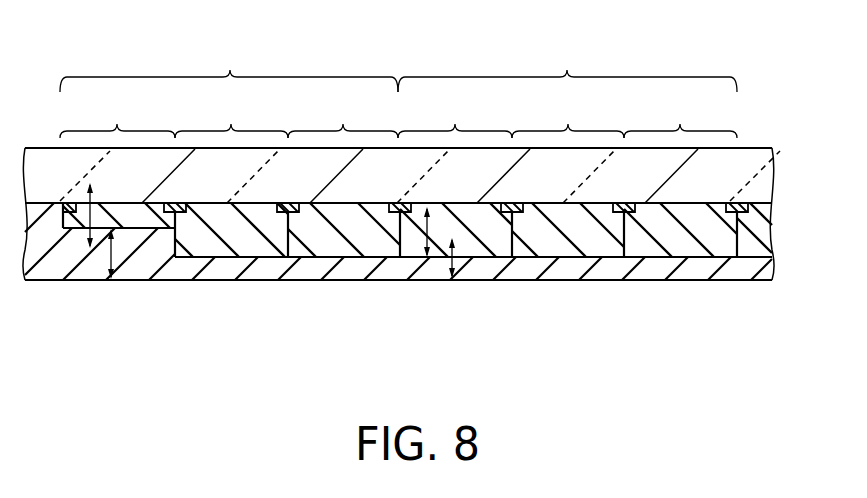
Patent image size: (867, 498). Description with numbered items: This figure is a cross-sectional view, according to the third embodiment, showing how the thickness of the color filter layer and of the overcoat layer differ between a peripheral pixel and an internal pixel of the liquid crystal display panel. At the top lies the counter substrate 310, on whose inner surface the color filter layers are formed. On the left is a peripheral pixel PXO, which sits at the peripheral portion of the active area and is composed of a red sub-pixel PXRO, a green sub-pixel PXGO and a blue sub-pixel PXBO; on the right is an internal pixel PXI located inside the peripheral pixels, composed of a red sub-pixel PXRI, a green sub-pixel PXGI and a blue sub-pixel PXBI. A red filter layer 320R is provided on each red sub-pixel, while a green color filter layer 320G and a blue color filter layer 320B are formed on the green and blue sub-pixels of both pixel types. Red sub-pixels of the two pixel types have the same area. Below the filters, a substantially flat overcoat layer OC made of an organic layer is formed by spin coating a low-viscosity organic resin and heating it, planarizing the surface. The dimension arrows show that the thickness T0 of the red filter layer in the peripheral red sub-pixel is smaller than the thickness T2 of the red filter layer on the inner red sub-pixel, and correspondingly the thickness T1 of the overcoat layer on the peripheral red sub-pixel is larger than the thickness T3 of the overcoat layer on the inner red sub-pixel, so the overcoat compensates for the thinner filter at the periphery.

The counter substrate 310 is at (767, 167).
The overcoat layer OC is at (768, 257).
The red filter layer 320R is at (130, 225).
The green color filter layer 320G is at (226, 243).
The blue color filter layer 320B is at (339, 245).
The thickness of the color filter layer in the peripheral red sub-pixel T0 is at (90, 250).
The thickness of the overcoat layer on the peripheral red sub-pixel T1 is at (111, 268).
The thickness of the color filter layer in the inner red sub-pixel T2 is at (427, 258).
The thickness of the overcoat layer on the inner red sub-pixel T3 is at (452, 270).
The peripheral pixel PXO is at (229, 62).
The internal pixel PXI is at (567, 62).
The red sub-pixel of the peripheral pixel PXRO is at (117, 118).
The green sub-pixel of the peripheral pixel PXGO is at (231, 118).
The blue sub-pixel of the peripheral pixel PXBO is at (343, 118).
The red sub-pixel of the internal pixel PXRI is at (455, 118).
The green sub-pixel of the internal pixel PXGI is at (568, 118).
The blue sub-pixel of the internal pixel PXBI is at (680, 118).